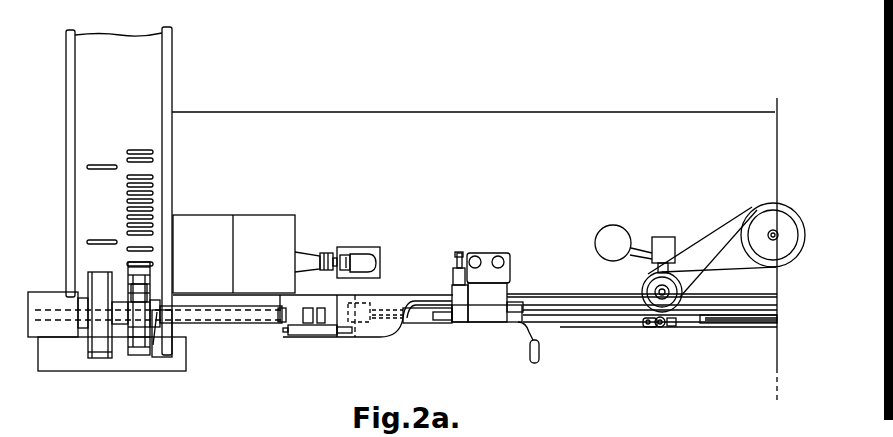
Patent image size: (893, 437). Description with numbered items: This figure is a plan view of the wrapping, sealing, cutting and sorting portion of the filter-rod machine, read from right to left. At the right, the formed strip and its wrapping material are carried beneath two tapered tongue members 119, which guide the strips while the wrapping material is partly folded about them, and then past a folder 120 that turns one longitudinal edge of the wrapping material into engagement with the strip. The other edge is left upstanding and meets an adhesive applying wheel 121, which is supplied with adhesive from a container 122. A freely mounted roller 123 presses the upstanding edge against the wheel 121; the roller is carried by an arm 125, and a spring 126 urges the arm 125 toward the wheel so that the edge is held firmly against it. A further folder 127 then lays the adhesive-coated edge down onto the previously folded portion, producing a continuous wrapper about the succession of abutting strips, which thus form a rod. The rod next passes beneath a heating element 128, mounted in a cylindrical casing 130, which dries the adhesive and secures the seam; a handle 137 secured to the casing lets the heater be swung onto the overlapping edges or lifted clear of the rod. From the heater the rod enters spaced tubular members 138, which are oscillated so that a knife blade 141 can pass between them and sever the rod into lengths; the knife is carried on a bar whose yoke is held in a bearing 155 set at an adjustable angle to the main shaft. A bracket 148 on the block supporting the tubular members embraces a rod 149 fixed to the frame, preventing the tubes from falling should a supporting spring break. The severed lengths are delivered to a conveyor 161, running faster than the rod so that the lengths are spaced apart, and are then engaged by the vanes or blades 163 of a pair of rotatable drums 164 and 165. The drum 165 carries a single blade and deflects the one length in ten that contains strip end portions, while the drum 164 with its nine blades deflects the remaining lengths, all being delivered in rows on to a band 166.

The band 166 is at (128, 47).
The rotatable drum 165 is at (100, 282).
The conveyor 161 is at (68, 312).
The vane or blade 163 is at (145, 272).
The rotatable drum 164 is at (143, 292).
The bracket 148 is at (288, 330).
The rod 149 is at (308, 325).
The tubular member 138 is at (314, 322).
The knife blade 141 is at (327, 251).
The bearing 155 is at (362, 262).
The cylindrical casing 130 is at (494, 318).
The heating element 128 is at (486, 328).
The handle 137 is at (539, 353).
The container 122 is at (606, 243).
The folder 120 is at (640, 312).
The adhesive applying wheel 121 is at (683, 288).
The further folder 127 is at (590, 320).
The arm 125 is at (649, 328).
The roller 123 is at (663, 328).
The spring 126 is at (677, 325).
The tongue member 119 is at (756, 323).